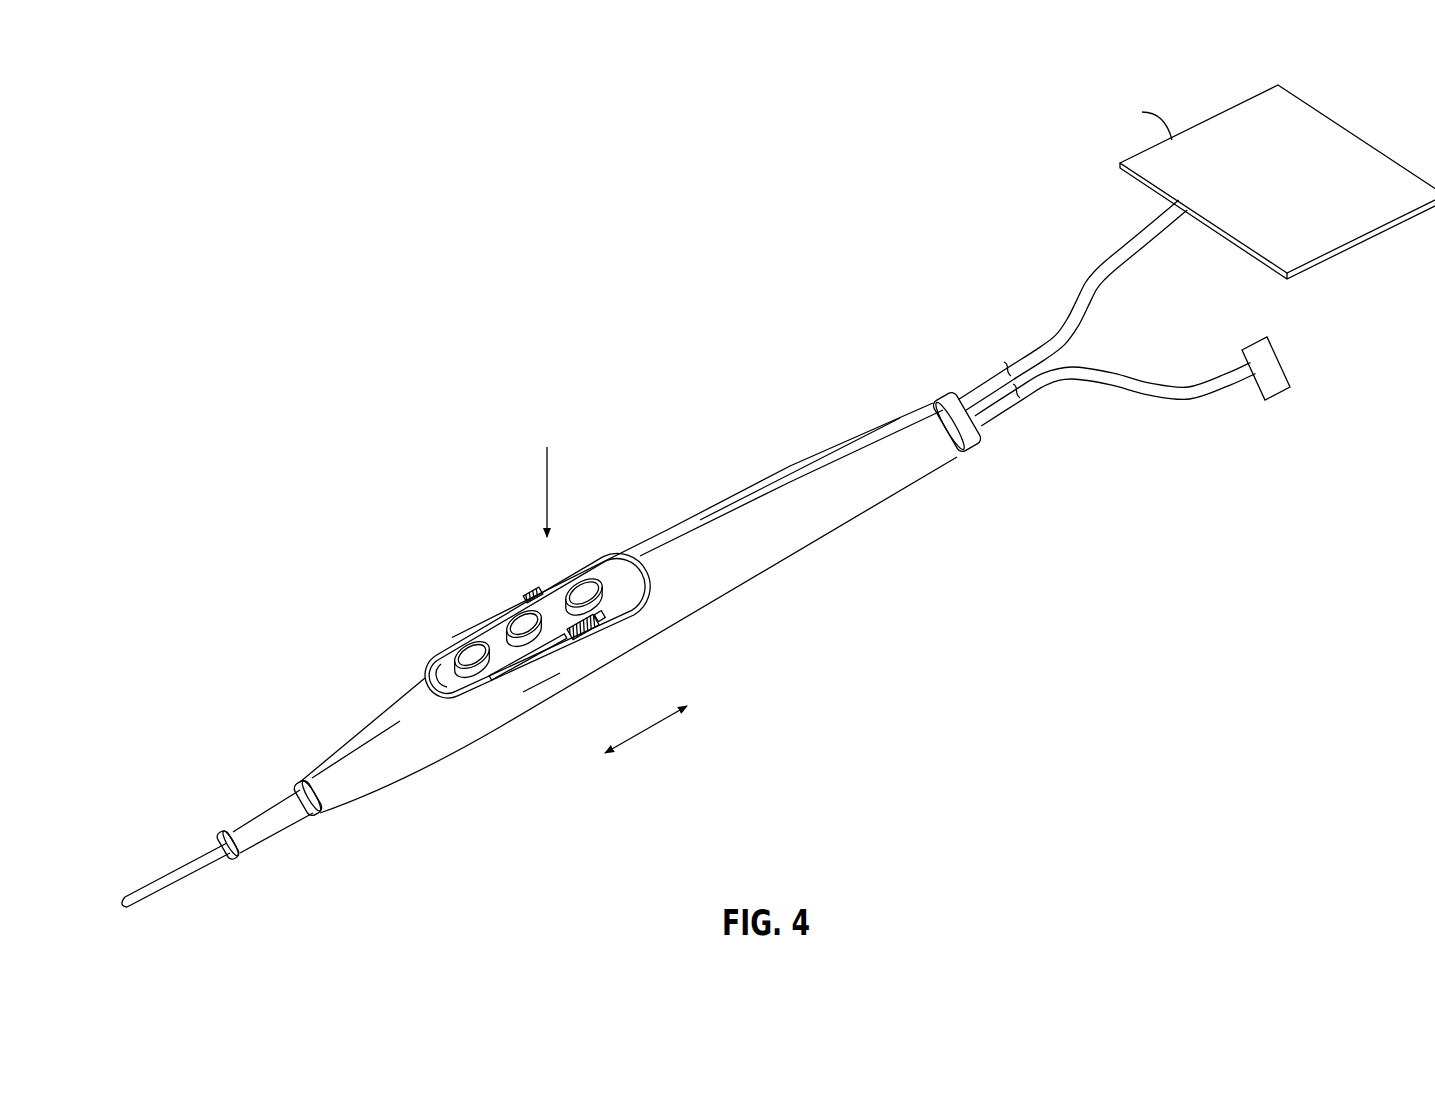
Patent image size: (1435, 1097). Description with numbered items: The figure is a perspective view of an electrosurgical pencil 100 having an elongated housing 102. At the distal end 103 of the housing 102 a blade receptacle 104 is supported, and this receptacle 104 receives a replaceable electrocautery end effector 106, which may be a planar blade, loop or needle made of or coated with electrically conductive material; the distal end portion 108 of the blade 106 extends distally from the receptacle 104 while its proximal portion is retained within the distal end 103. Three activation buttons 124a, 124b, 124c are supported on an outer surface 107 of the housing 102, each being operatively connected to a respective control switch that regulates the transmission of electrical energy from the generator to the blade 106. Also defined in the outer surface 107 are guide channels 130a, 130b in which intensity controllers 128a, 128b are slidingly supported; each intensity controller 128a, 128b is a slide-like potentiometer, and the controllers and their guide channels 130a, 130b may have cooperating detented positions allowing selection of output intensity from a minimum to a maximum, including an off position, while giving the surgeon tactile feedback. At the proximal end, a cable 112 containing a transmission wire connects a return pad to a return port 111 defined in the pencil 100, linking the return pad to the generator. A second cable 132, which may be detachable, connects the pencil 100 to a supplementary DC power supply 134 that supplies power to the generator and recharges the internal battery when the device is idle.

The electrosurgical pencil 100 is at (407, 417).
The elongated housing 102 is at (665, 528).
The distal end 103 is at (336, 742).
The blade receptacle 104 is at (273, 822).
The electrocautery end effector 106 is at (170, 862).
The outer surface 107 is at (740, 576).
The distal end portion 108 is at (123, 908).
The return port 111 is at (948, 393).
The cable 112 is at (1027, 347).
The activation button 124a is at (454, 648).
The activation button 124b is at (512, 614).
The activation button 124c is at (573, 590).
The intensity controller 128a is at (612, 630).
The intensity controller 128b is at (531, 590).
The guide channel 130a is at (550, 663).
The guide channel 130b is at (430, 668).
The cable 132 is at (1168, 408).
The supplementary DC power supply 134 is at (1255, 350).